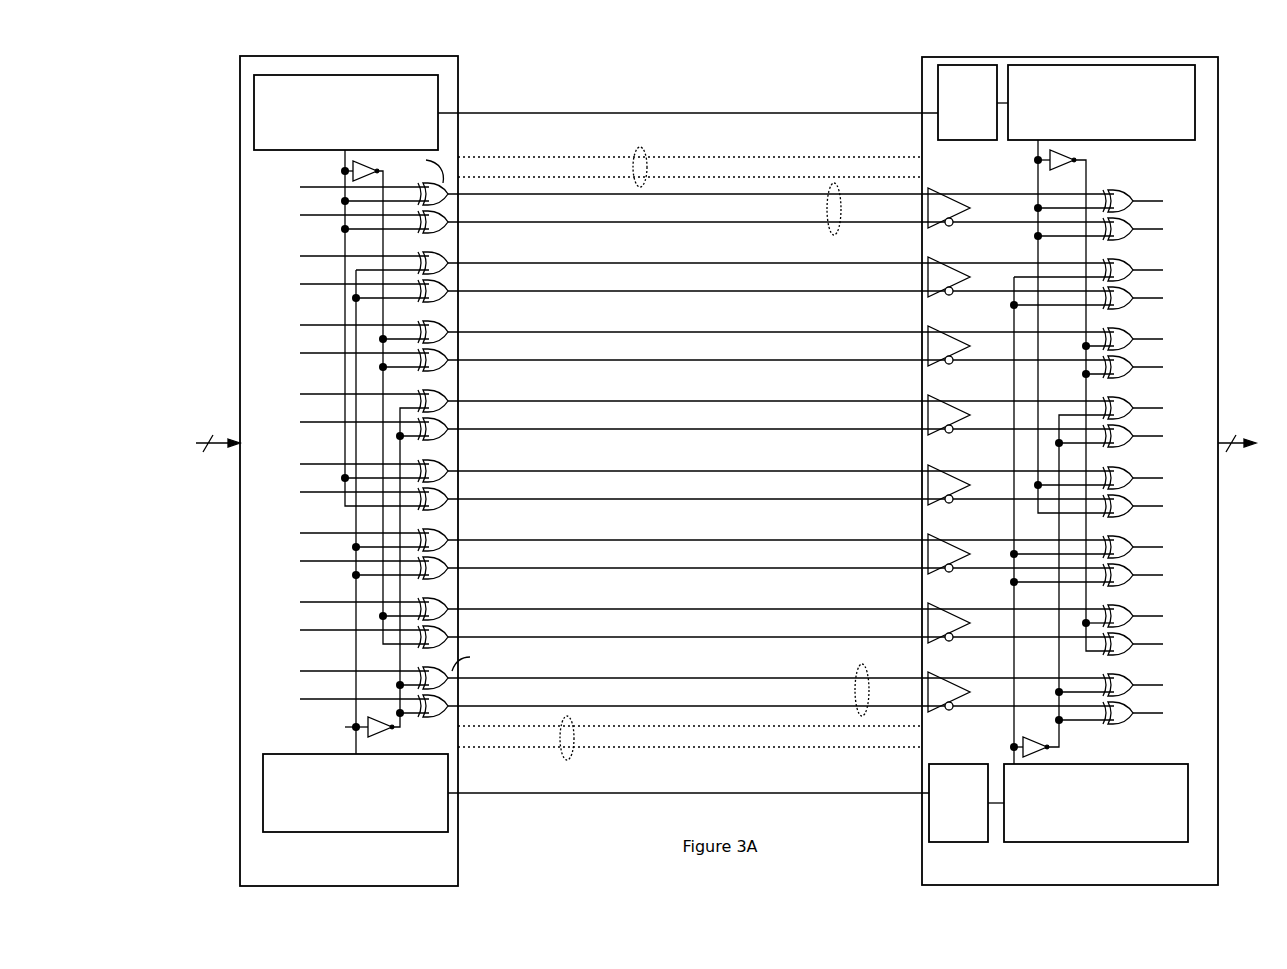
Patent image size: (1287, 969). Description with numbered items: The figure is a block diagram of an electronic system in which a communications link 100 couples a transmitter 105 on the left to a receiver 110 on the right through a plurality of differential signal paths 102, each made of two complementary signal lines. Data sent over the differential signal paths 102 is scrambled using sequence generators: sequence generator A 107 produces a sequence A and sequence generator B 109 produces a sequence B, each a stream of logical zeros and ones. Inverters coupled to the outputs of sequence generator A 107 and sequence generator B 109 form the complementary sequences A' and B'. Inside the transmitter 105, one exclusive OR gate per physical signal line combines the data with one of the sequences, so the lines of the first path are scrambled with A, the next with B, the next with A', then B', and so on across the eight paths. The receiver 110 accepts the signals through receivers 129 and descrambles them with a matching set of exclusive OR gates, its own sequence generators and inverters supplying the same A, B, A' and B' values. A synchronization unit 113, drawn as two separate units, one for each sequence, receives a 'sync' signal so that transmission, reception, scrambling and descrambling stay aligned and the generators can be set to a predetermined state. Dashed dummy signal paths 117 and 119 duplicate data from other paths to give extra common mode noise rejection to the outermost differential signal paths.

The communications link 100 is at (677, 84).
The differential signal paths 102 is at (838, 183).
The transmitter 105 is at (349, 471).
The sequence generator A 107 is at (724, 107).
The sequence generator B 109 is at (725, 798).
The receiver 110 is at (1070, 471).
The synchronization unit 113 is at (968, 453).
The dummy signal path 117 is at (640, 146).
The dummy signal path 119 is at (567, 760).
The receivers 129 is at (949, 692).